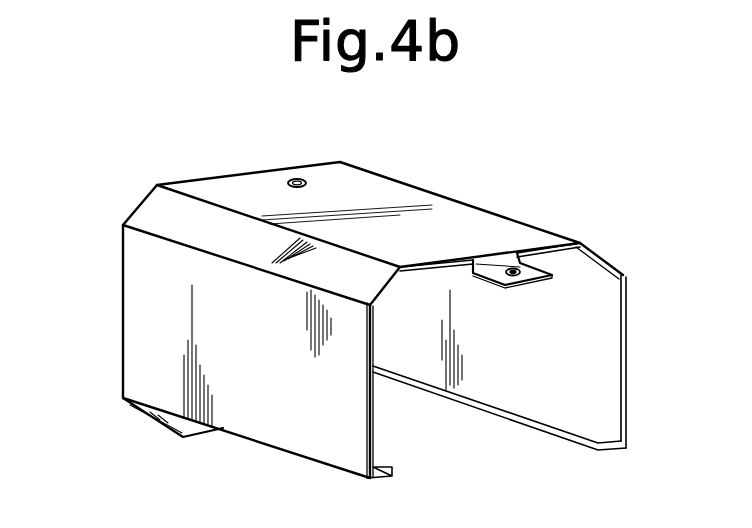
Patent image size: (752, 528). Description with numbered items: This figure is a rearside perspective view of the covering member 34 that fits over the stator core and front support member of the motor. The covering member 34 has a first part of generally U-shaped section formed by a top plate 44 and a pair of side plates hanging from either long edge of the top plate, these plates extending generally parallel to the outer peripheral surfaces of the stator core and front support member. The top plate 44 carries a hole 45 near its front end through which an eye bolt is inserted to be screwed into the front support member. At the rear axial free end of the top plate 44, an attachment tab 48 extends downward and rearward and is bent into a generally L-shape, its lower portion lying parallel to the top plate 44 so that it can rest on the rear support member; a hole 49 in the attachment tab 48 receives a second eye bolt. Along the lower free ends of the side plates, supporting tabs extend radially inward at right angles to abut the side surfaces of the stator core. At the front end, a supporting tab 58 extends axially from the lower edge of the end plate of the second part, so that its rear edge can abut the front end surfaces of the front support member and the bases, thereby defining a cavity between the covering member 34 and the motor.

The covering member 34 is at (376, 330).
The top plate 44 is at (503, 220).
The hole 45 is at (292, 180).
The attachment tab 48 is at (587, 237).
The hole 49 is at (520, 266).
The supporting tab 58 is at (181, 437).